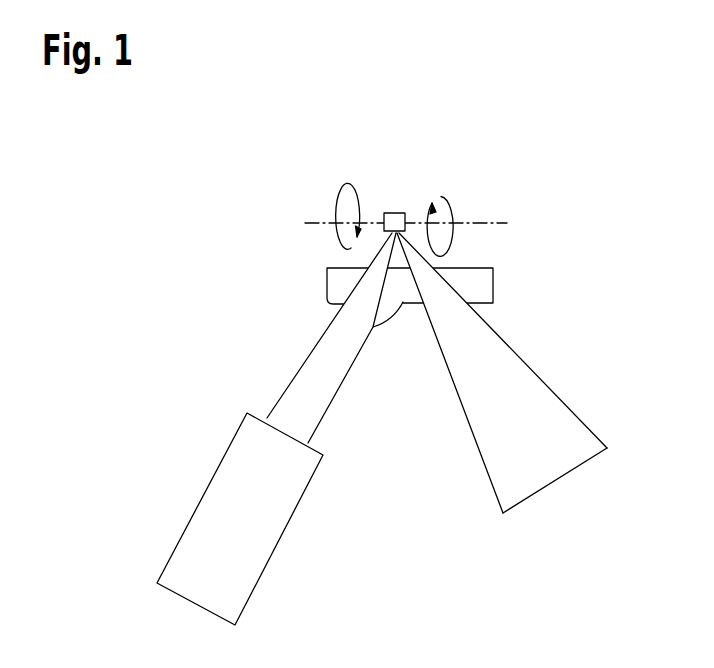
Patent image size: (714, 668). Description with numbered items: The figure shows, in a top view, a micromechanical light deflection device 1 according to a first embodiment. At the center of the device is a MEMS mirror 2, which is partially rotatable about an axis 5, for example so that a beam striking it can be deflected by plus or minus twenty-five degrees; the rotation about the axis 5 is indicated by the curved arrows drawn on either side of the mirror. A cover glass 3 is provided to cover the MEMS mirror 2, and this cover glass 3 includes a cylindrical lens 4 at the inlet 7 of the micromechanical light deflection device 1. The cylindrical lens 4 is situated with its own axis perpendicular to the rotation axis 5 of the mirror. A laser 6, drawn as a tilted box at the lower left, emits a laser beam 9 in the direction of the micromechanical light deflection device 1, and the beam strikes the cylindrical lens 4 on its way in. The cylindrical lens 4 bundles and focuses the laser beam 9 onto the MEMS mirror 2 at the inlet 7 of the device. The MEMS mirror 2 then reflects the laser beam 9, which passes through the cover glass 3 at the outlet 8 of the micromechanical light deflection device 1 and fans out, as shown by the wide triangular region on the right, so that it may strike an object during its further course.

The micromechanical light deflection device 1 is at (350, 199).
The MEMS mirror 2 is at (395, 212).
The cover glass 3 is at (494, 284).
The cylindrical lens 4 is at (403, 303).
The axis 5 is at (496, 217).
The laser 6 is at (208, 486).
The inlet 7 is at (313, 323).
The outlet 8 is at (543, 330).
The laser beam 9 is at (568, 497).